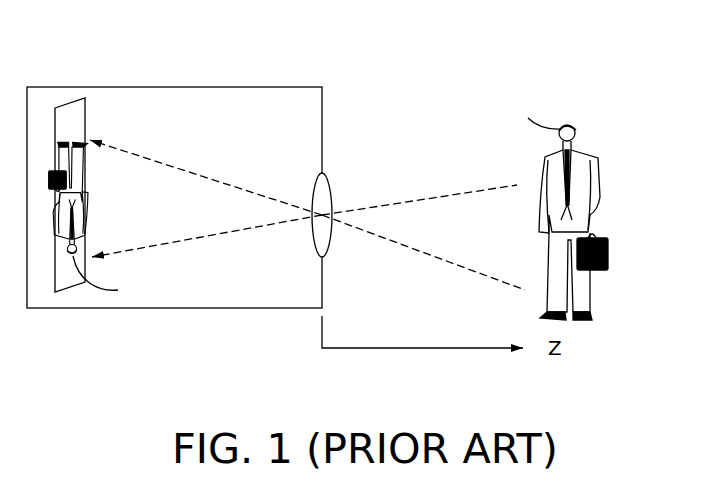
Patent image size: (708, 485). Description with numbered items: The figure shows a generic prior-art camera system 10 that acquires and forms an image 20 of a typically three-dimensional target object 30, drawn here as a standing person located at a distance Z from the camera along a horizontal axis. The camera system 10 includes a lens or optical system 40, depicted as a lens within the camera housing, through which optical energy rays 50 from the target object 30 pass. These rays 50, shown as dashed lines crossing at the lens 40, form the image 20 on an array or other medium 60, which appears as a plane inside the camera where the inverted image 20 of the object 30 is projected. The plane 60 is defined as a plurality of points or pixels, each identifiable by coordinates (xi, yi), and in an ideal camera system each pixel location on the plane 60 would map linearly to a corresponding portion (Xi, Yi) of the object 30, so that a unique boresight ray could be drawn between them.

The camera system 10 is at (374, 61).
The image 20 is at (84, 187).
The target object 30 is at (622, 151).
The lens or optical system 40 is at (334, 183).
The optical energy rays 50 is at (415, 193).
The array or other medium 60 is at (67, 111).